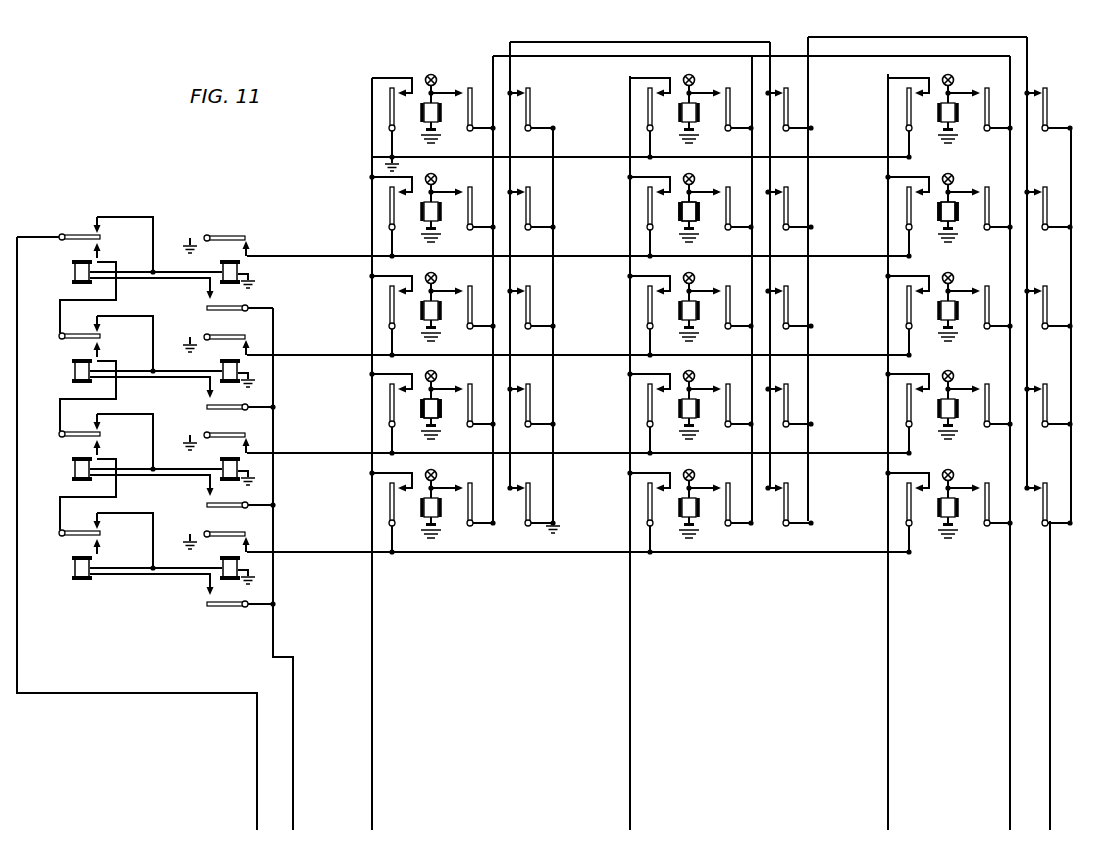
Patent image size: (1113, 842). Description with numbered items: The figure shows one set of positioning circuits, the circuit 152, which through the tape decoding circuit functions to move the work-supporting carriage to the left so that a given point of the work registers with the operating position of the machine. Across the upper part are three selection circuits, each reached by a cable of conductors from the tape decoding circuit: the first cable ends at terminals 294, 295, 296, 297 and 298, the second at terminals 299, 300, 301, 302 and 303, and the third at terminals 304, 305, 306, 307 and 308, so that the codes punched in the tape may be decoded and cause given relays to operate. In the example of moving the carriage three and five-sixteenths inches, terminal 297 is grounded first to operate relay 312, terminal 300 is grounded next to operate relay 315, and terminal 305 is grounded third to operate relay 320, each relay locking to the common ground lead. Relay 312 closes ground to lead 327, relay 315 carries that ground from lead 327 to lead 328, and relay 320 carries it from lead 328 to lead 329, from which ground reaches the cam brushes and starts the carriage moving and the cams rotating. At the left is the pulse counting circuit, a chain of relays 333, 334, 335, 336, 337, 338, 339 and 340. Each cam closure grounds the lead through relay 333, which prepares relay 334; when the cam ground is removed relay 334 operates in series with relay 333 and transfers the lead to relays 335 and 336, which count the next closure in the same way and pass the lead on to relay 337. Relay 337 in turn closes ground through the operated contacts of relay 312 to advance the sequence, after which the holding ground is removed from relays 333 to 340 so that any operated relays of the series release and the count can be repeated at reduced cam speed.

The circuit 152 is at (336, 231).
The terminal 294 is at (436, 75).
The terminal 295 is at (436, 174).
The terminal 296 is at (436, 273).
The terminal 297 is at (436, 371).
The terminal 298 is at (436, 470).
The terminal 299 is at (694, 75).
The terminal 300 is at (694, 174).
The terminal 301 is at (694, 273).
The terminal 302 is at (694, 371).
The terminal 303 is at (694, 470).
The terminal 304 is at (953, 75).
The terminal 305 is at (953, 174).
The terminal 306 is at (953, 273).
The terminal 307 is at (953, 371).
The terminal 308 is at (953, 470).
The relay 312 is at (441, 408).
The relay 315 is at (699, 211).
The relay 320 is at (958, 211).
The lead 327 is at (510, 42).
The lead 328 is at (864, 56).
The lead 329 is at (1071, 192).
The relay 333 is at (240, 264).
The relay 334 is at (74, 268).
The relay 335 is at (222, 363).
The relay 336 is at (74, 366).
The relay 337 is at (222, 466).
The relay 338 is at (74, 466).
The relay 339 is at (222, 565).
The relay 340 is at (74, 572).